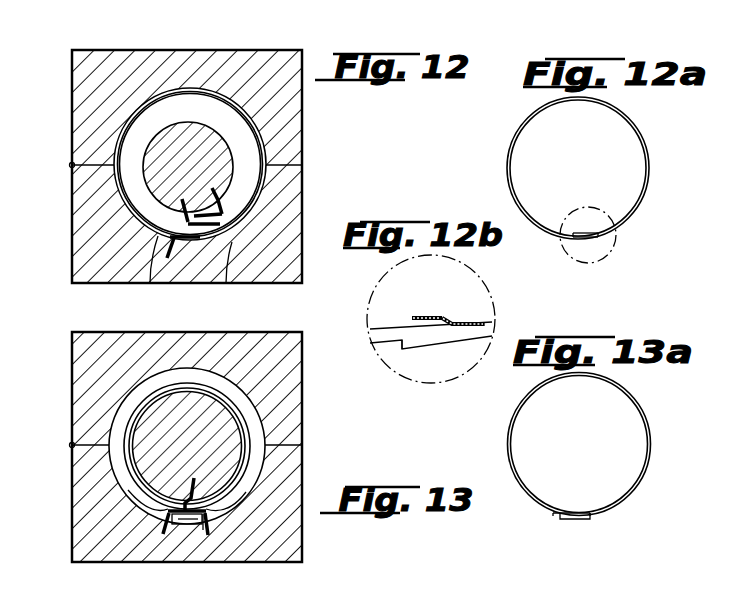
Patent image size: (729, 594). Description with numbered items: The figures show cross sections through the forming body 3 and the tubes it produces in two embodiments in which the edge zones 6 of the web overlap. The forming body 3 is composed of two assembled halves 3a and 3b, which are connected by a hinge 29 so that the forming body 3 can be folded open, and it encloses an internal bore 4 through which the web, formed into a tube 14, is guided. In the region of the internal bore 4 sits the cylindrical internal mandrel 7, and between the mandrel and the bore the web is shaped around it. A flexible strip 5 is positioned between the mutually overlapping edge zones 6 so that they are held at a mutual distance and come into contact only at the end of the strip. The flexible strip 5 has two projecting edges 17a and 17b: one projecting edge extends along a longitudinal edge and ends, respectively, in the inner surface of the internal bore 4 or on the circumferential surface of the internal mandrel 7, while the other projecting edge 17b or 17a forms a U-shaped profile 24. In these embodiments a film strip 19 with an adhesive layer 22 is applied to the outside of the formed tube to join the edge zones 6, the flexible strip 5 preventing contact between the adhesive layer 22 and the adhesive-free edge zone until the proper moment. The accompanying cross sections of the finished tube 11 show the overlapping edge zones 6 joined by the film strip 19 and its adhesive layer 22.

In FIG. 12, the forming body 3 is at (270, 51).
In FIG. 13, the forming body 3 is at (291, 333).
In FIG. 12, the body half 3a is at (283, 103).
In FIG. 13, the body half 3a is at (290, 382).
In FIG. 12, the body half 3b is at (290, 248).
In FIG. 13, the body half 3b is at (287, 540).
In FIG. 12, the internal bore 4 is at (128, 213).
In FIG. 13, the internal bore 4 is at (130, 488).
In FIG. 12, the flexible strip 5 is at (192, 240).
In FIG. 13, the flexible strip 5 is at (217, 512).
In FIG. 12a, the edge zones 6 is at (578, 245).
In FIG. 12b, the edge zones 6 is at (406, 345).
In FIG. 13a, the edge zones 6 is at (596, 513).
In FIG. 12, the internal mandrel 7 is at (217, 150).
In FIG. 13, the internal mandrel 7 is at (227, 425).
In FIG. 12a, the tube 11 is at (650, 165).
In FIG. 12b, the tube 11 is at (389, 326).
In FIG. 13a, the tube 11 is at (651, 450).
In FIG. 12, the tube 14 is at (188, 89).
In FIG. 13, the tube 14 is at (137, 412).
In FIG. 12, the projecting edge 17a is at (217, 237).
In FIG. 13, the projecting edge 17a is at (197, 490).
In FIG. 12, the projecting edge 17b is at (181, 232).
In FIG. 13, the projecting edge 17b is at (163, 526).
In FIG. 12, the film strip 19 is at (217, 193).
In FIG. 12a, the film strip 19 is at (583, 232).
In FIG. 12b, the film strip 19 is at (425, 315).
In FIG. 13, the film strip 19 is at (184, 524).
In FIG. 13a, the film strip 19 is at (557, 517).
In FIG. 12, the adhesive layer 22 is at (208, 215).
In FIG. 12b, the adhesive layer 22 is at (444, 318).
In FIG. 13, the adhesive layer 22 is at (187, 519).
In FIG. 13a, the adhesive layer 22 is at (575, 516).
In FIG. 12, the U-shaped profile 24 is at (167, 222).
In FIG. 13, the U-shaped profile 24 is at (204, 536).
In FIG. 12, the hinge 29 is at (70, 165).
In FIG. 13, the hinge 29 is at (70, 445).